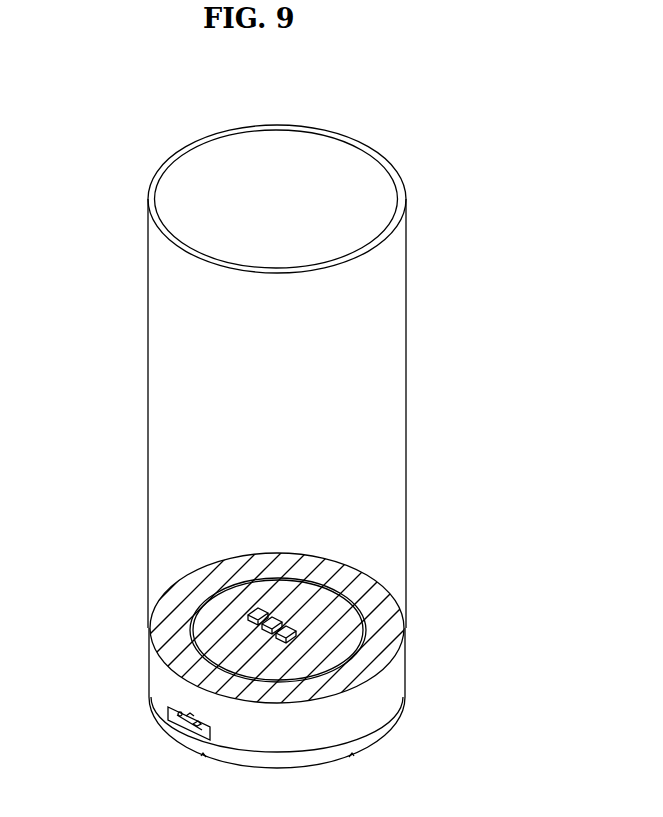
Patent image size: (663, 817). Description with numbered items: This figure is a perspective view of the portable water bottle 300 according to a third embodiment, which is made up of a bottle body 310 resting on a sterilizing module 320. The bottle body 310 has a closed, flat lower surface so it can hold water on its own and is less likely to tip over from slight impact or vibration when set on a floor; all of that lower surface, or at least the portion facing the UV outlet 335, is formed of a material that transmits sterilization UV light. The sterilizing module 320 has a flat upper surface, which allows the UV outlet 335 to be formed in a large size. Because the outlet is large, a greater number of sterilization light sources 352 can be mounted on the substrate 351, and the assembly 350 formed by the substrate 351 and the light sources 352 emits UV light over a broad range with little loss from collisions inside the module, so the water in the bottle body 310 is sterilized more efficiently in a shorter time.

The portable water bottle 300 is at (72, 89).
The bottle body 310 is at (393, 345).
The sterilizing module 320 is at (392, 682).
The UV outlet 335 is at (365, 582).
The charging unit 350 is at (370, 630).
The substrate 351 is at (343, 647).
The sterilization light sources 352 is at (296, 630).